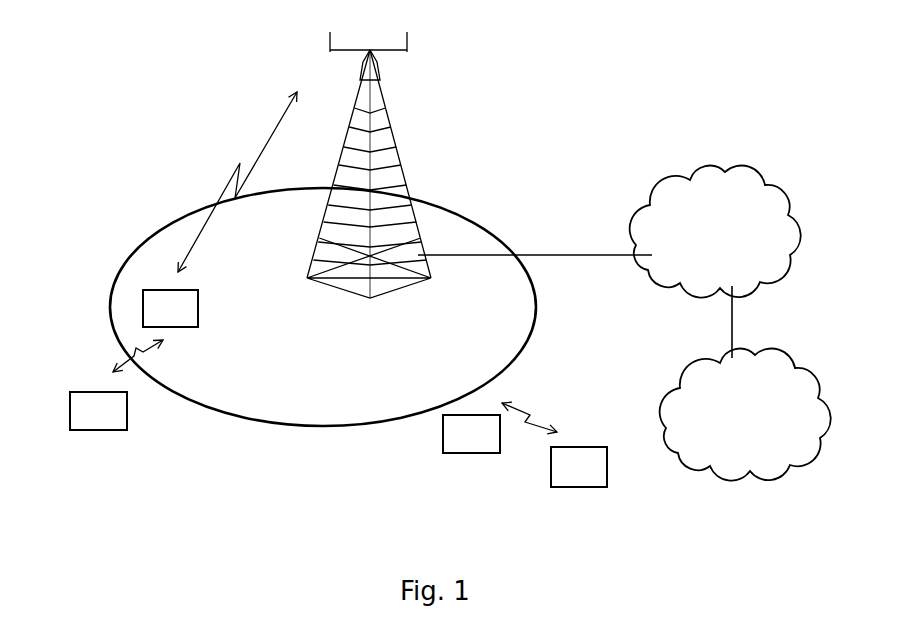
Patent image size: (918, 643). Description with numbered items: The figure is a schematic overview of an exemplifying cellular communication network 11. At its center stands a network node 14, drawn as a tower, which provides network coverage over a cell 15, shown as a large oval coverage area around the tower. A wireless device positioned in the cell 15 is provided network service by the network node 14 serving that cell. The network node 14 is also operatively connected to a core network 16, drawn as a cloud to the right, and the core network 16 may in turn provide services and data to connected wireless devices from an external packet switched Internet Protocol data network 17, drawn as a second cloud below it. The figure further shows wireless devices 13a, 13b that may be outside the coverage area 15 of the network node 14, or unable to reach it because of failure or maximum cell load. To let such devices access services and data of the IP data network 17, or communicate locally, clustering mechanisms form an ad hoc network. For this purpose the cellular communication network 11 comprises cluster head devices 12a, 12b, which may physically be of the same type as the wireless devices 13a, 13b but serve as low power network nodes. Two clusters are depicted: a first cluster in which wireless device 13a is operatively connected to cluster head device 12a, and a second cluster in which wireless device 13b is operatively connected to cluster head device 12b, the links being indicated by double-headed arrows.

The cellular communication network 11 is at (142, 148).
The cluster head device 12a is at (143, 307).
The cluster head device 12b is at (468, 453).
The wireless device 13a is at (95, 430).
The wireless device 13b is at (577, 487).
The network node 14 is at (387, 150).
The cell 15 is at (264, 402).
The core network 16 is at (715, 231).
The IP data network 17 is at (745, 414).